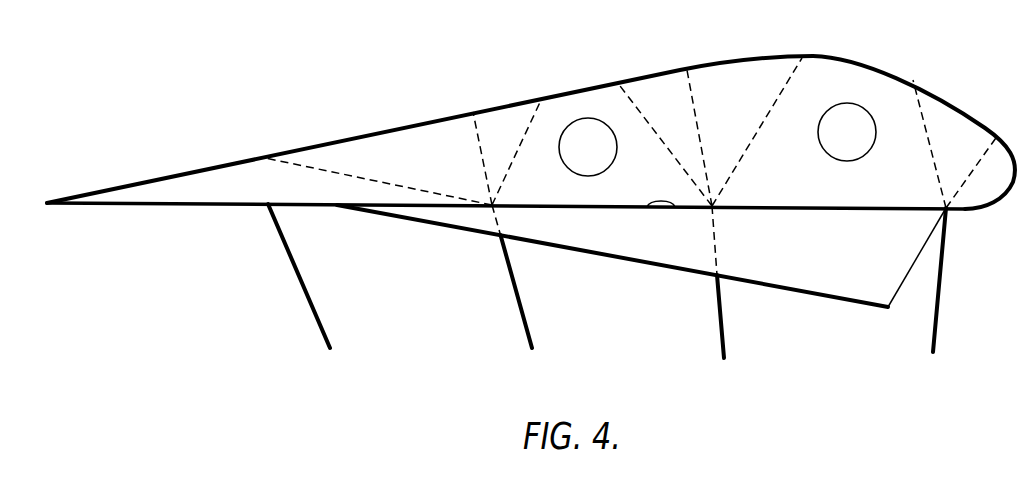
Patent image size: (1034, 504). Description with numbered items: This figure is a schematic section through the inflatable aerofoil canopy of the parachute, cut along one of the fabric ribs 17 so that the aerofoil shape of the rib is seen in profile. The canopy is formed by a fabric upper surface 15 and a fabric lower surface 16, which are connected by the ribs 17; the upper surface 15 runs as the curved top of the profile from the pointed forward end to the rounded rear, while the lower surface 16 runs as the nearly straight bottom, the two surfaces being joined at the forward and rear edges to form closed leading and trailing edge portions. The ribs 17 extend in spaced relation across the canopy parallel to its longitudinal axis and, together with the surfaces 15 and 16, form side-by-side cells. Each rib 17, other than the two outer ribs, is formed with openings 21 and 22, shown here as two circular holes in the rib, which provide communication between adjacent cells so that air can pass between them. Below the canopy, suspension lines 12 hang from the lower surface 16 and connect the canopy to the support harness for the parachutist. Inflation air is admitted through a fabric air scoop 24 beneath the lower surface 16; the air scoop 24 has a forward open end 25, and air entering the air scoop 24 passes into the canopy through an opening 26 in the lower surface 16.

The suspension lines 12 is at (322, 322).
The fabric upper surface 15 is at (728, 60).
The fabric lower surface 16 is at (755, 210).
The fabric ribs 17 is at (840, 83).
The opening 21 is at (832, 148).
The opening 22 is at (606, 150).
The fabric air scoop 24 is at (790, 290).
The forward open end 25 is at (922, 250).
The opening 26 is at (647, 207).